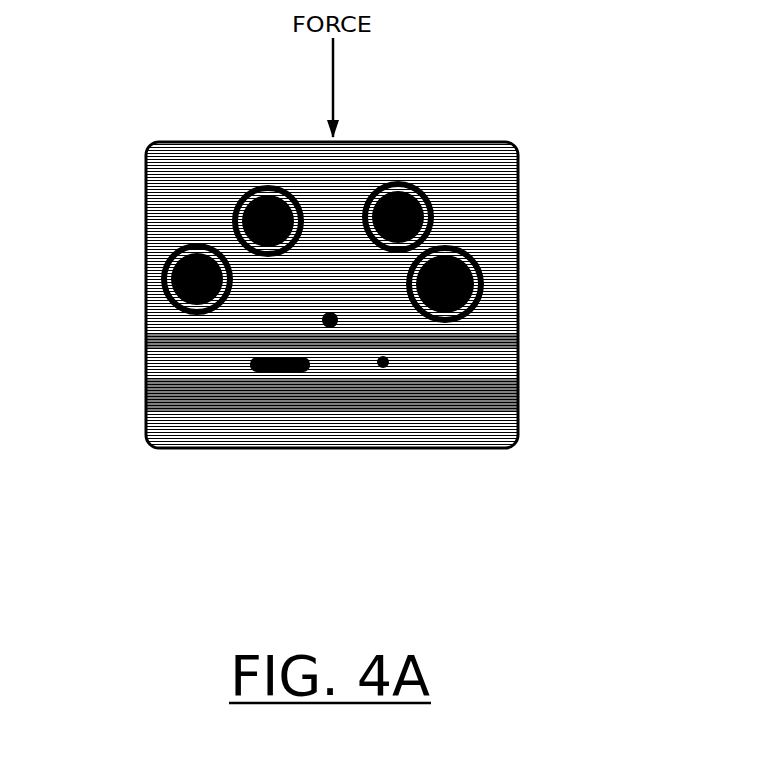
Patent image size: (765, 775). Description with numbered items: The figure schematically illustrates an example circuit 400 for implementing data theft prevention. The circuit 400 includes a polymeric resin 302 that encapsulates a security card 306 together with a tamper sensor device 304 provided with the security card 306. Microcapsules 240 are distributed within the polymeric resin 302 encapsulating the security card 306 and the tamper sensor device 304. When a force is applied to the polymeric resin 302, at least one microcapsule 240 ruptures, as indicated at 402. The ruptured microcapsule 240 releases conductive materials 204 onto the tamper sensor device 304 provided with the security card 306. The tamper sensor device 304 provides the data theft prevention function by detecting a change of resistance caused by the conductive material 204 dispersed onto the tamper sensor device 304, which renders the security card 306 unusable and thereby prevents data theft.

The circuit 400 is at (263, 76).
The conductive materials 204 is at (327, 320).
The microcapsules 240 is at (420, 196).
The polymeric resin 302 is at (497, 283).
The tamper sensor device 304 is at (170, 340).
The security card 306 is at (447, 413).
The microcapsule rupture 402 is at (330, 330).